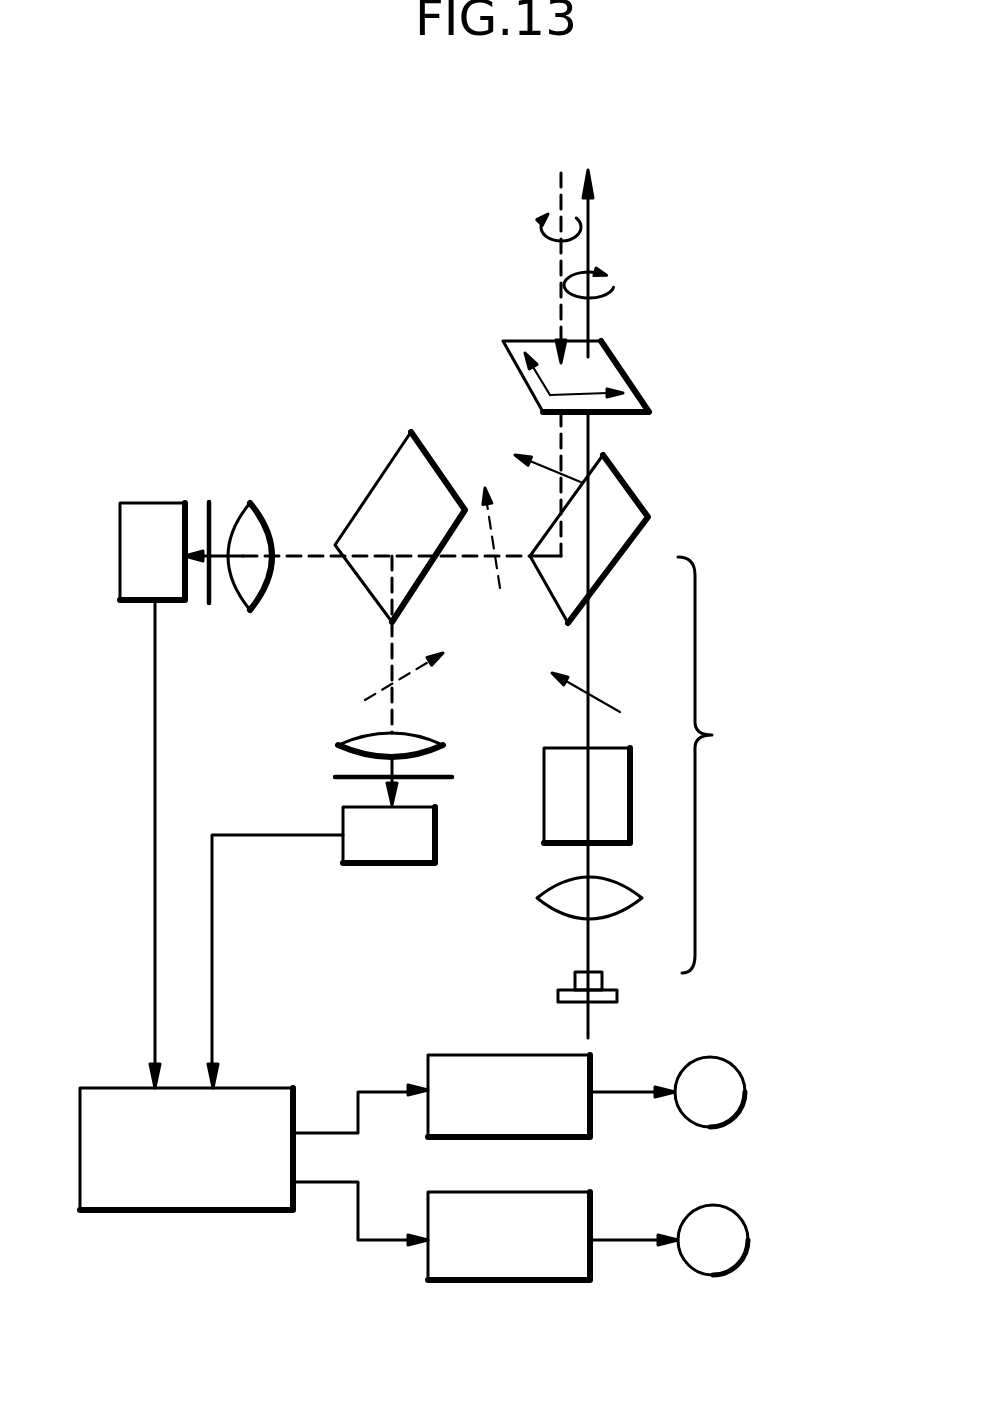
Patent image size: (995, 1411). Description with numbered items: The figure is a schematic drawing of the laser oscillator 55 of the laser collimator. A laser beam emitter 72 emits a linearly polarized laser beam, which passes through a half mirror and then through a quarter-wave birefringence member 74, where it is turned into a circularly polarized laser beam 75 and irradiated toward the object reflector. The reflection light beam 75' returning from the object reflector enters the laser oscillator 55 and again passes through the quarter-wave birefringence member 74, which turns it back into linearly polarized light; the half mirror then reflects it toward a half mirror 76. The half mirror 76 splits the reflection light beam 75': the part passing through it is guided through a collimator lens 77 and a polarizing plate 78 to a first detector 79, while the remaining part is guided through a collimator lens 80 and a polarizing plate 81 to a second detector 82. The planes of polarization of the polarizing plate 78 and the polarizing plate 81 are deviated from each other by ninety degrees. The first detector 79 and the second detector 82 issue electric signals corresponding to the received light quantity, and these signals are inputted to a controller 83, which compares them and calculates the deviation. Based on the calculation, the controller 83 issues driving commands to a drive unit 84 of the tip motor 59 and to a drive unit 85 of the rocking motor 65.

The laser oscillator 55 is at (851, 138).
The laser beam emitter 72 is at (647, 779).
The λ/4 birefringence member 74 is at (627, 377).
The circularly polarized laser beam 75 is at (638, 604).
The reflection light beam 75' is at (504, 364).
The half mirror 76 is at (375, 485).
The collimator lens 77 is at (250, 503).
The polarizing plate 78 is at (212, 588).
The first detector 79 is at (157, 503).
The collimator lens 80 is at (412, 745).
The polarizing plate 81 is at (433, 780).
The second detector 82 is at (392, 865).
The controller 83 is at (173, 1213).
The drive unit 84 is at (498, 1052).
The drive unit 85 is at (512, 1280).
The tip motor 59 is at (745, 1092).
The rocking motor 65 is at (748, 1240).